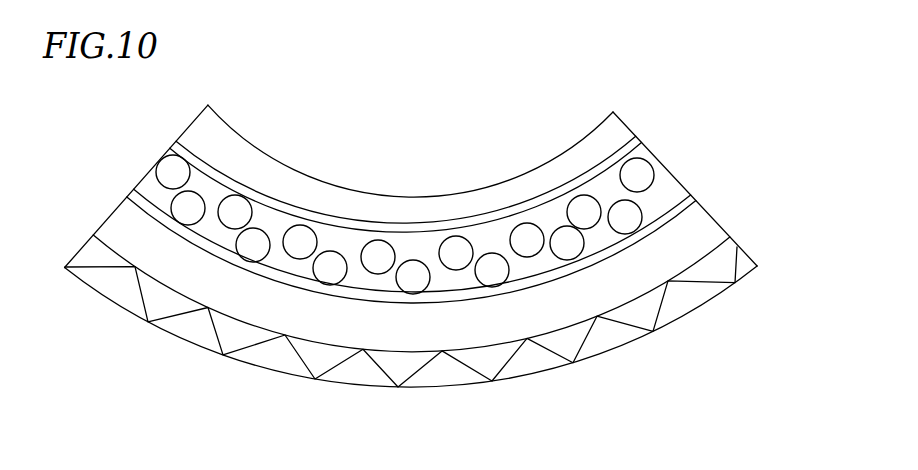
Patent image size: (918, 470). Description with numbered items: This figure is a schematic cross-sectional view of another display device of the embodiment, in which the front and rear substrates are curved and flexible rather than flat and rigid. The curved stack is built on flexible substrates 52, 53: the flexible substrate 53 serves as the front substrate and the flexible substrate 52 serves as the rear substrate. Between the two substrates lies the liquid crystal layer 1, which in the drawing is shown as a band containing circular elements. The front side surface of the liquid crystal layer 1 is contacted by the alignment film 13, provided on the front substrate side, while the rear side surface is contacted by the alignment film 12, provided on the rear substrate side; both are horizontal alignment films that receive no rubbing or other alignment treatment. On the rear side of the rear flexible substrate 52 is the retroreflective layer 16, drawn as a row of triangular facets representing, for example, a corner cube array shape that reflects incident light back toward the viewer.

The liquid crystal layer 1 is at (667, 190).
The flexible substrate 53 is at (615, 122).
The alignment film 13 is at (638, 145).
The alignment film 12 is at (698, 193).
The flexible substrate 52 is at (627, 282).
The retroreflective layer 16 is at (747, 263).